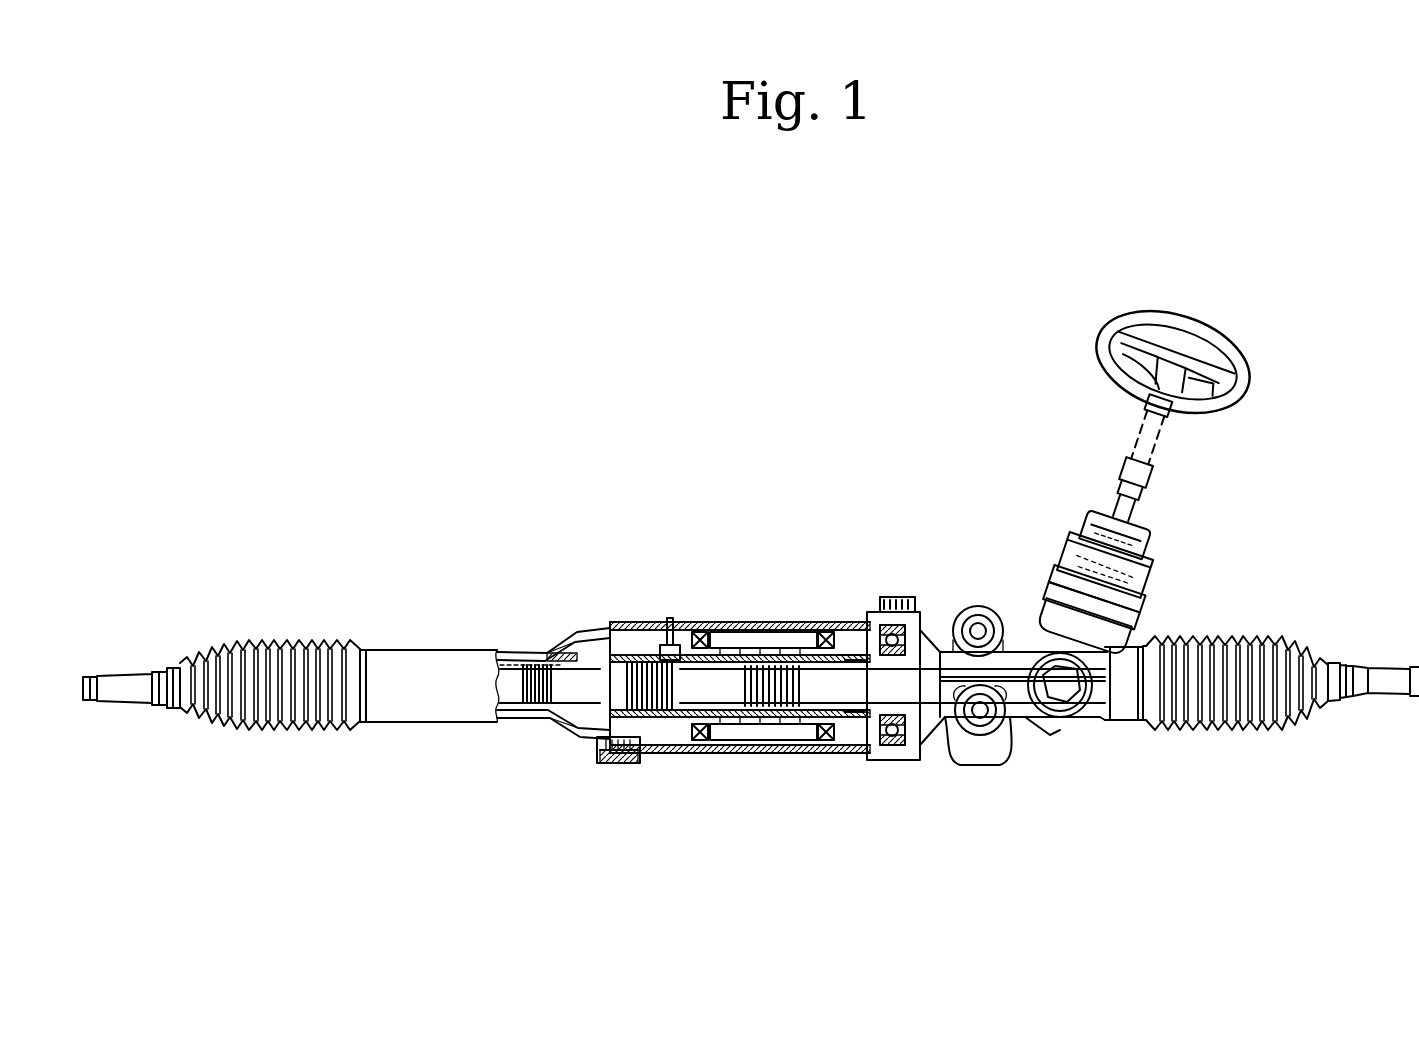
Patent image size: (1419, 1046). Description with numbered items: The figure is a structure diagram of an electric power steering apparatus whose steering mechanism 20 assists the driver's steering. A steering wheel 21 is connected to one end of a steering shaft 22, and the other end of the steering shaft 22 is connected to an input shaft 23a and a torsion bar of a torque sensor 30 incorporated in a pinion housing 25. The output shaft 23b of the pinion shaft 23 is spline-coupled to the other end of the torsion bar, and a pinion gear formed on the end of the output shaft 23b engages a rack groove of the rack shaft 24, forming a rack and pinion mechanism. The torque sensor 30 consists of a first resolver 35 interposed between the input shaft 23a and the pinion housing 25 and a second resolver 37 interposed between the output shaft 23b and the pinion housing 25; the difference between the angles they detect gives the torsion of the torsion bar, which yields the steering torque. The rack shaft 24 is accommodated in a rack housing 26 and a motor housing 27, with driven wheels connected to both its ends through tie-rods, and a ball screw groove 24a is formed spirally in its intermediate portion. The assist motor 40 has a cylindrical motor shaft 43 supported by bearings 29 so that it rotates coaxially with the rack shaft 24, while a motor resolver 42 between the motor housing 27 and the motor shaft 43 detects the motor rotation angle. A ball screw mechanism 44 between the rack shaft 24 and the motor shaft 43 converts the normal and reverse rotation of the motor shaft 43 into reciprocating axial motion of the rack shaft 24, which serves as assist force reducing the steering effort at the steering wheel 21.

The steering mechanism 20 is at (328, 296).
The steering wheel 21 is at (1240, 355).
The steering shaft 22 is at (1122, 436).
The pinion shaft 23 is at (1143, 493).
The input shaft 23a is at (1062, 518).
The output shaft 23b is at (1032, 586).
The rack shaft 24 is at (503, 690).
The ball screw groove 24a is at (565, 700).
The pinion housing 25 is at (1048, 556).
The rack housing 26 is at (525, 640).
The motor housing 27 is at (780, 623).
The bearings 29 is at (867, 625).
The torque sensor 30 is at (1240, 530).
The first resolver 35 is at (1152, 570).
The second resolver 37 is at (1142, 602).
The assist motor 40 is at (720, 625).
The motor resolver 42 is at (855, 725).
The motor shaft 43 is at (750, 720).
The ball screw mechanism 44 is at (606, 640).